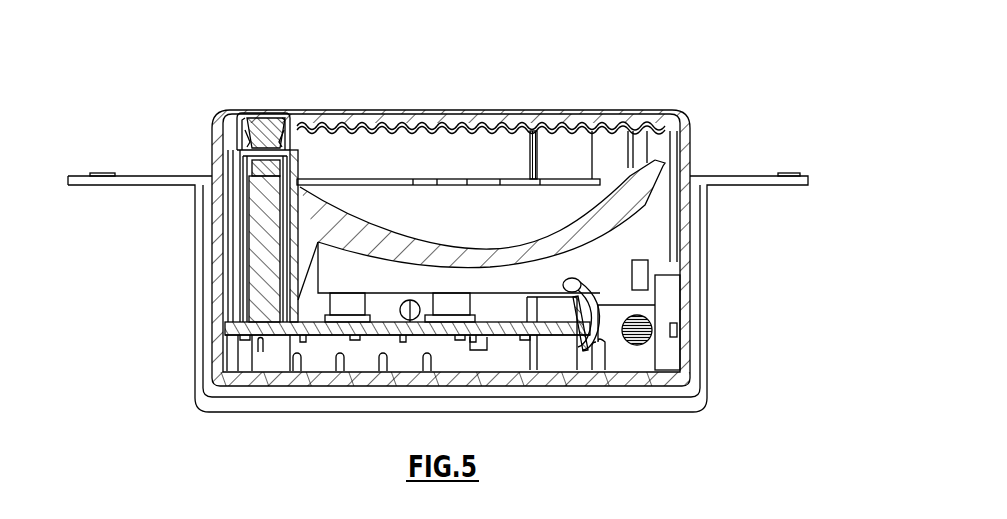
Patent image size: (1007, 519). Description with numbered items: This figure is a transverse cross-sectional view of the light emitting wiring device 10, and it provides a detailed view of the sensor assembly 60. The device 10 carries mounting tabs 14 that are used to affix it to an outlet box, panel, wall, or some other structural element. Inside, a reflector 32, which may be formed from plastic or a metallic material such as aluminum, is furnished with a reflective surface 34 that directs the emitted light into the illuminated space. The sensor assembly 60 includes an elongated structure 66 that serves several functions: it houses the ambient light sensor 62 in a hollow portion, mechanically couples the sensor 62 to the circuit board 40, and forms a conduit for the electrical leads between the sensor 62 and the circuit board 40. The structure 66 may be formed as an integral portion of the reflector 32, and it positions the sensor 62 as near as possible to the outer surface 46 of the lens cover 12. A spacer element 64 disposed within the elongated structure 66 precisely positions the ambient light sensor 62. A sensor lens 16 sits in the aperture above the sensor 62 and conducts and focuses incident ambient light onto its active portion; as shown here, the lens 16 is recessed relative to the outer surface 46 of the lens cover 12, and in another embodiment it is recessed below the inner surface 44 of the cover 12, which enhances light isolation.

The light emitting wiring device 10 is at (552, 75).
The lens cover 12 is at (480, 113).
The mounting tabs 14 is at (110, 175).
The sensor lens 16 is at (266, 122).
The reflector 32 is at (408, 247).
The reflective surface 34 is at (338, 227).
The circuit board 40 is at (280, 325).
The inner surface 44 is at (433, 132).
The outer surface 46 is at (435, 107).
The sensor assembly 60 is at (247, 162).
The ambient light sensor 62 is at (278, 167).
The spacer element 64 is at (252, 235).
The elongated structure 66 is at (240, 110).